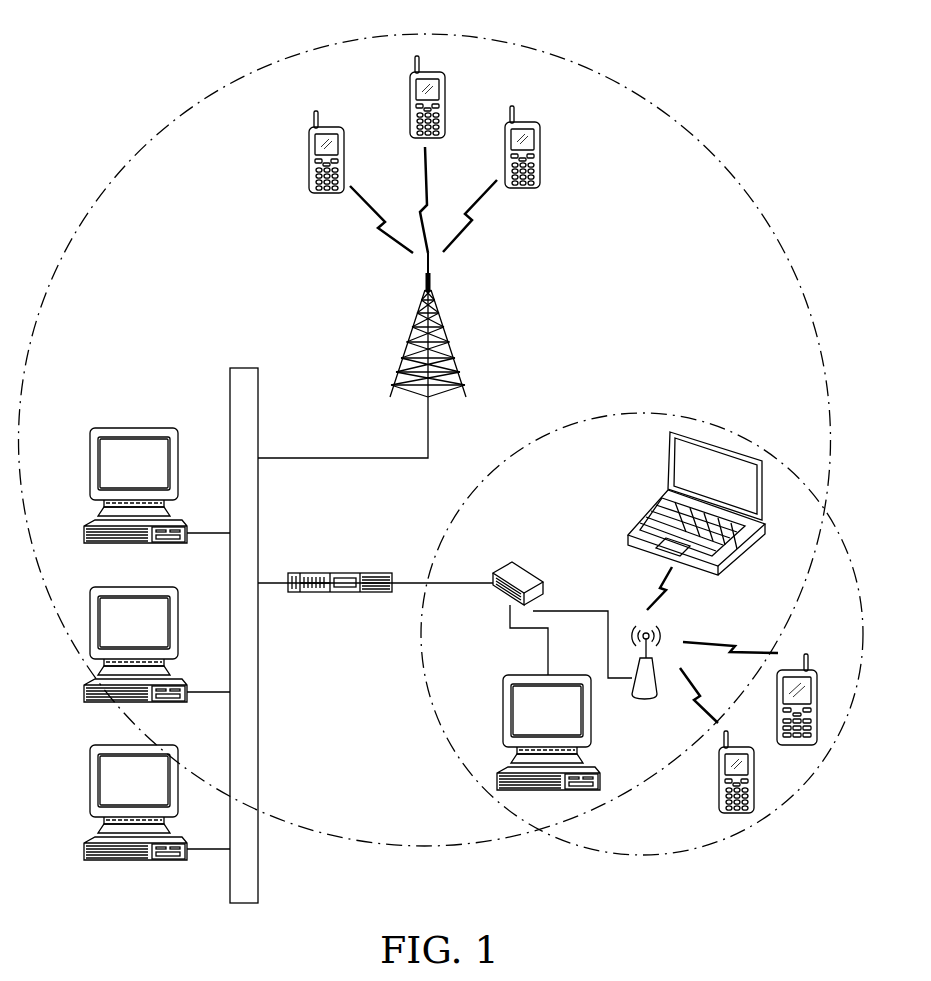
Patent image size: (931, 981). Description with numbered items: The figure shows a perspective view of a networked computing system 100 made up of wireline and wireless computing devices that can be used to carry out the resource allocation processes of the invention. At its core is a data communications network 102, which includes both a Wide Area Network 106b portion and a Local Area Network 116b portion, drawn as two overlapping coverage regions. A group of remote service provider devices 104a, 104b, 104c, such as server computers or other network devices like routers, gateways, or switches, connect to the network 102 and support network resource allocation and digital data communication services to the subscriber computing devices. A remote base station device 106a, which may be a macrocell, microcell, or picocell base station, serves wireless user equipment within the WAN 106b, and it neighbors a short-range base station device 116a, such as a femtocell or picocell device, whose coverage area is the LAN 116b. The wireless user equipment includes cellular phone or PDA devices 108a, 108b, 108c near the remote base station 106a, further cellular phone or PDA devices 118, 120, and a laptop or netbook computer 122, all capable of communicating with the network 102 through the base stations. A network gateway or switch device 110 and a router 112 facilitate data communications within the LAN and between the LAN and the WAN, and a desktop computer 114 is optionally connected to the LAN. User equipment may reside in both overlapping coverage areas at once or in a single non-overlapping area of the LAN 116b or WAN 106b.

The networked computing system 100 is at (181, 42).
The data communications network 102 is at (230, 408).
The remote service provider device 104a is at (120, 428).
The remote service provider device 104b is at (125, 587).
The remote service provider device 104c is at (112, 745).
The remote base station device 106a is at (445, 340).
The Wide Area Network 106b is at (741, 185).
The cellular phone or PDA device 108a is at (309, 150).
The cellular phone or PDA device 108b is at (410, 95).
The cellular phone or PDA device 108c is at (540, 150).
The network gateway or switch device 110 is at (345, 573).
The router 112 is at (528, 573).
The desktop computer 114 is at (517, 673).
The short-range base station device 116a is at (645, 700).
The Local Area Network 116b is at (597, 423).
The cellular phone or PDA device 118 is at (736, 814).
The cellular phone or PDA device 120 is at (797, 746).
The laptop or netbook computer 122 is at (647, 512).